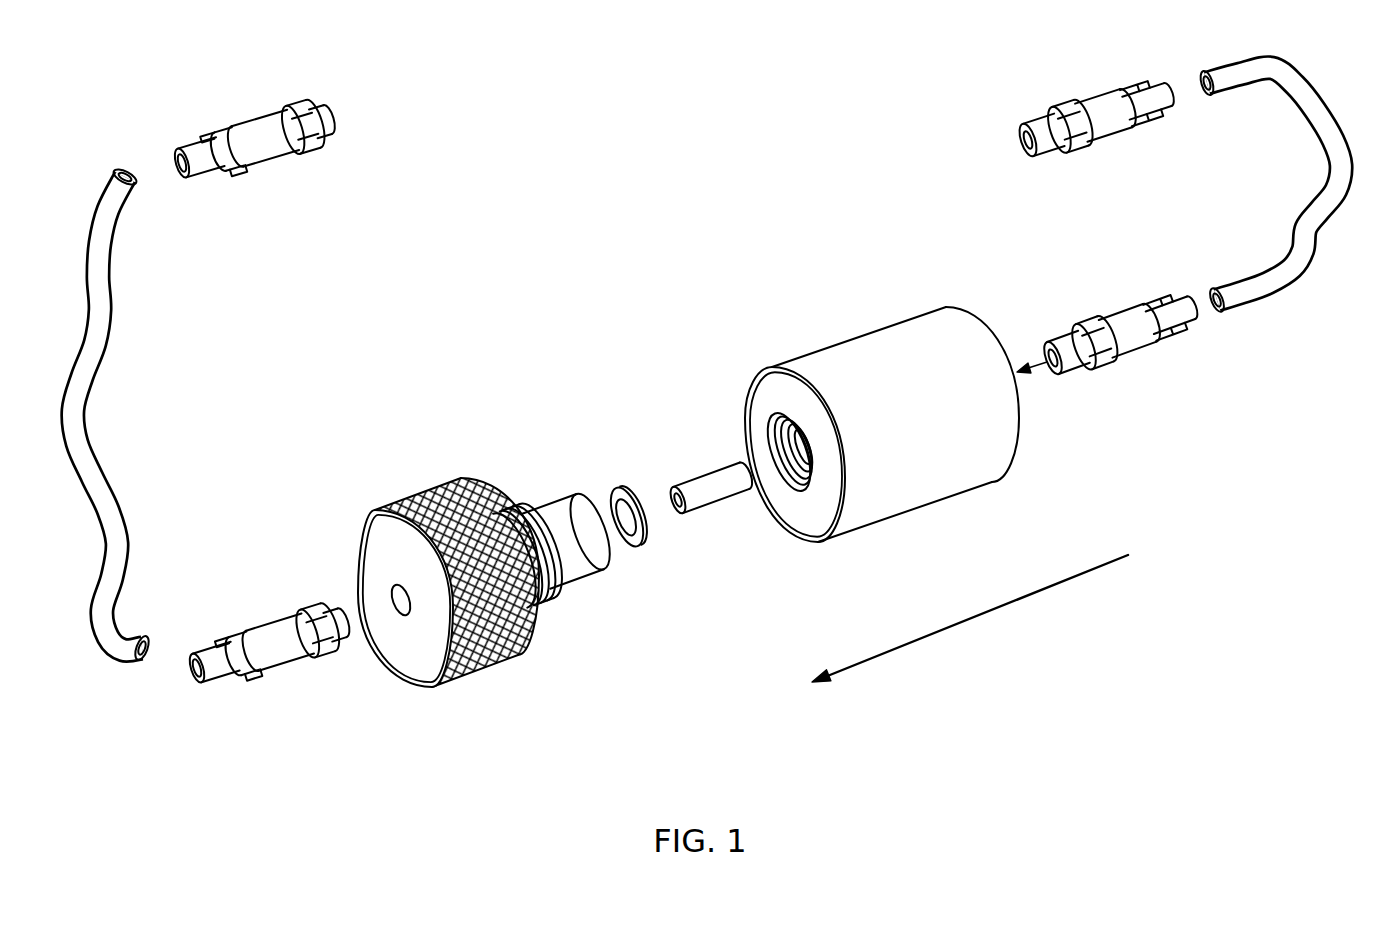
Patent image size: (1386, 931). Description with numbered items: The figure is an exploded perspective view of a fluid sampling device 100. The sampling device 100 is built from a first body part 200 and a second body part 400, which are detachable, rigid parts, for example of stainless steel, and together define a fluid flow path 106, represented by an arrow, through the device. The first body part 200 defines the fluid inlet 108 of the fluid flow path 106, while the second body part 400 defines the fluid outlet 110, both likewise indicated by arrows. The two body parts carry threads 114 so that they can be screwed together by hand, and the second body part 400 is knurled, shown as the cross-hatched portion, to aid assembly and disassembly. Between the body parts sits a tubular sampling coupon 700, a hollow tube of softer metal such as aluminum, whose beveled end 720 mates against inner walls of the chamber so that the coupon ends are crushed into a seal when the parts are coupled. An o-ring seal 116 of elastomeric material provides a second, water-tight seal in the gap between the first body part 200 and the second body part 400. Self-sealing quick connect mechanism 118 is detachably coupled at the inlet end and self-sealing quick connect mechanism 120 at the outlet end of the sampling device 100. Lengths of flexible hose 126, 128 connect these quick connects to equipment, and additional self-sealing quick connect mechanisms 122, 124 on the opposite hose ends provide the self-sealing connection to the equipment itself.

The fluid sampling device 100 is at (707, 405).
The fluid flow path 106 is at (1078, 577).
The fluid inlet 108 is at (1036, 365).
The fluid outlet 110 is at (388, 672).
The threads 114 is at (541, 603).
The o-ring seal 116 is at (622, 485).
The self-sealing quick connect mechanism 118 is at (1104, 347).
The self-sealing quick connect mechanism 120 is at (269, 652).
The self-sealing quick connect mechanism 122 is at (1084, 127).
The self-sealing quick connect mechanism 124 is at (249, 142).
The hose 126 is at (1326, 156).
The hose 128 is at (84, 404).
The first body part 200 is at (884, 422).
The second body part 400 is at (457, 610).
The tubular sampling coupon 700 is at (694, 496).
The beveled end 720 is at (673, 509).